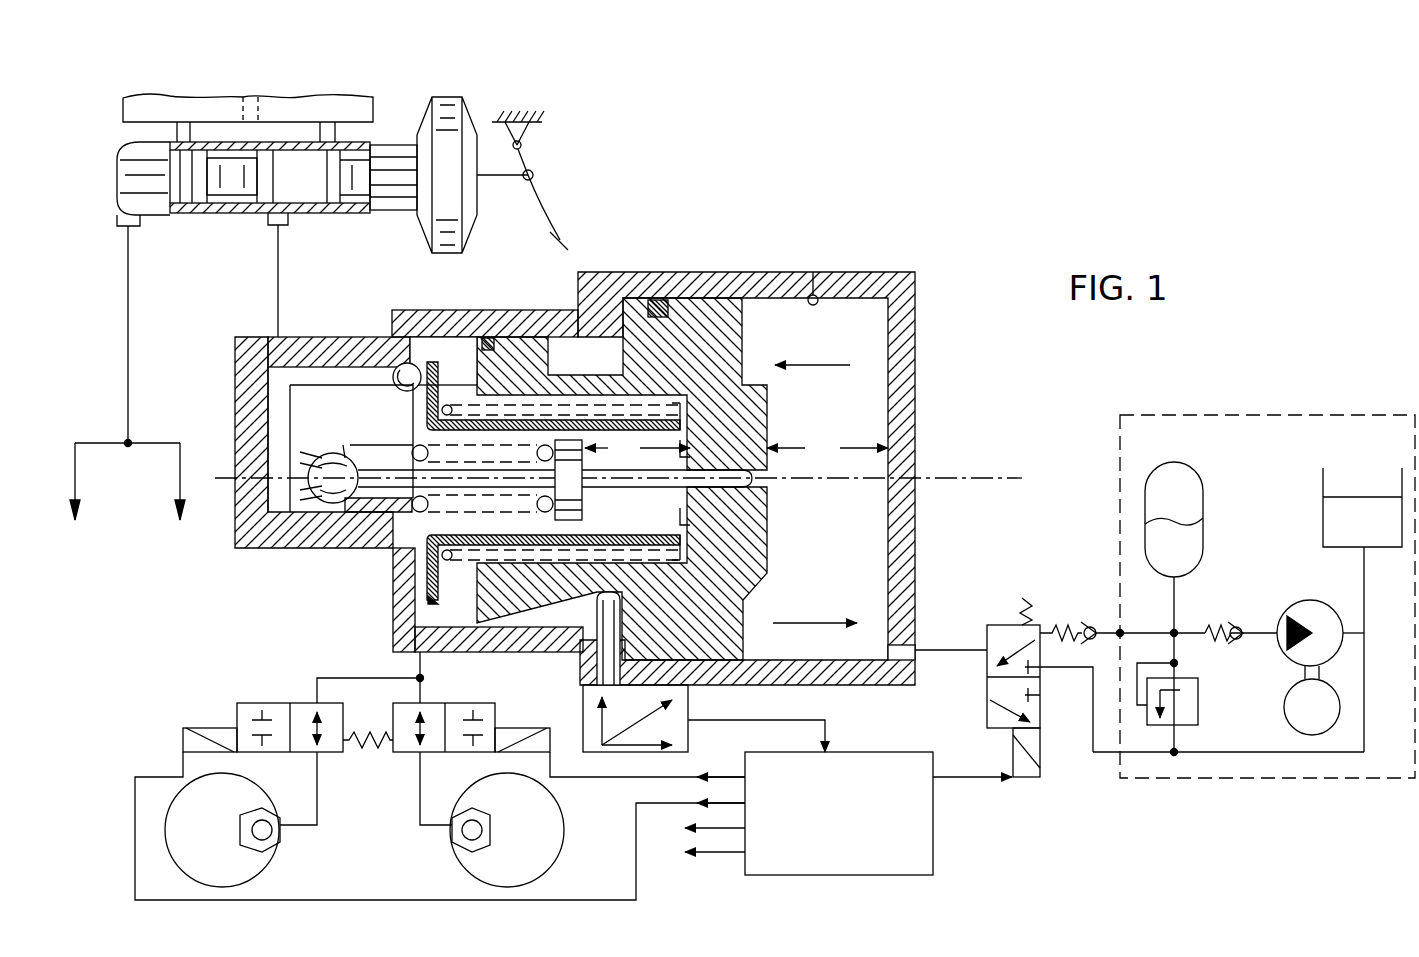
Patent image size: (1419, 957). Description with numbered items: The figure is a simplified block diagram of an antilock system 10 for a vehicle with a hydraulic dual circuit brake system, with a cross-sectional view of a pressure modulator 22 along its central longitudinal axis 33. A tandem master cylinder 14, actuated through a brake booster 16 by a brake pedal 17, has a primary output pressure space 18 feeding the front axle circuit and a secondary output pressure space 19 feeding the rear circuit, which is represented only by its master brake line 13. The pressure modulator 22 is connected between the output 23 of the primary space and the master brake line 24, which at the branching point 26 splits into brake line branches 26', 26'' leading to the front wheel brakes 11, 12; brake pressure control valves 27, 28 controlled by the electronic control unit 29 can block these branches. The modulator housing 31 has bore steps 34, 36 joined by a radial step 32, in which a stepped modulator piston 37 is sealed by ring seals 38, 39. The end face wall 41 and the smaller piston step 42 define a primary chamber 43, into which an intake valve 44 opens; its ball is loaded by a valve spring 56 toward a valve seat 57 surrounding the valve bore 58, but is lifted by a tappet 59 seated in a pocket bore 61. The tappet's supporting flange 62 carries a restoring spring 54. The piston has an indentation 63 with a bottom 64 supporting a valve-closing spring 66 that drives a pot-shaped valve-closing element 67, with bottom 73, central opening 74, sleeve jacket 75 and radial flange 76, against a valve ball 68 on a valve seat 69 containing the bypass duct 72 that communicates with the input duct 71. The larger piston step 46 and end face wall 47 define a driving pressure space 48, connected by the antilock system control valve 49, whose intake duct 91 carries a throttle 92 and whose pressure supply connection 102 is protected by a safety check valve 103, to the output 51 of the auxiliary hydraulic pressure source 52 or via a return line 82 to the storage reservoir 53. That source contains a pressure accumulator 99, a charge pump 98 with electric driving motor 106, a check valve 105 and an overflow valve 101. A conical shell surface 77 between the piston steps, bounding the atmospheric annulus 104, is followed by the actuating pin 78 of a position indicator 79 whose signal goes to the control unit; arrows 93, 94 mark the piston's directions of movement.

The antilock system 10 is at (912, 258).
The front wheel brake 11 is at (198, 858).
The front wheel brake 12 is at (547, 846).
The master brake line 13 is at (126, 388).
The tandem master cylinder 14 is at (385, 142).
The brake booster 16 is at (468, 205).
The brake pedal 17 is at (545, 212).
The primary output pressure space 18 is at (310, 170).
The secondary output pressure space 19 is at (180, 168).
The pressure modulator 22 is at (918, 300).
The output 23 is at (268, 216).
The master brake line 24 is at (415, 665).
The branching point 26 is at (438, 678).
The brake line branch 26' is at (318, 811).
The brake line branch 26'' is at (418, 811).
The brake pressure control valve 27 is at (280, 705).
The brake pressure control valve 28 is at (487, 705).
The electronic control unit 29 is at (934, 842).
The housing 31 is at (770, 276).
The radial step 32 is at (612, 300).
The central longitudinal axis 33 is at (978, 478).
The bore step 34 is at (545, 335).
The bore step 36 is at (815, 293).
The modulator piston 37 is at (640, 298).
The ring seal 38 is at (490, 338).
The ring seal 39 is at (664, 300).
The end face wall 41 is at (348, 546).
The smaller piston step 42 is at (463, 345).
The primary chamber 43 is at (440, 360).
The intake valve 44 is at (278, 550).
The larger piston step 46 is at (733, 346).
The end face wall 47 is at (915, 332).
The driving pressure space 48 is at (862, 388).
The antilock system control valve 49 is at (987, 712).
The output 51 is at (1121, 632).
The auxiliary hydraulic pressure source 52 is at (1243, 414).
The storage reservoir 53 is at (1360, 505).
The restoring spring 54 is at (450, 428).
The valve spring 56 is at (305, 470).
The valve seat 57 is at (363, 442).
The valve bore 58 is at (395, 458).
The tappet 59 is at (503, 400).
The pocket bore 61 is at (766, 506).
The supporting flange 62 is at (581, 502).
The indentation 63 is at (741, 384).
The bottom 64 is at (700, 458).
The valve-closing spring 66 is at (434, 566).
The valve-closing element 67 is at (434, 600).
The valve ball 68 is at (395, 372).
The valve seat 69 is at (400, 365).
The input duct 71 is at (243, 357).
The bypass duct 72 is at (313, 367).
The bottom 73 is at (750, 532).
The central opening 74 is at (678, 520).
The sleeve jacket 75 is at (527, 580).
The radial flange 76 is at (400, 585).
The shell surface 77 is at (568, 368).
The actuating pin 78 is at (690, 602).
The position indicator 79 is at (688, 740).
The return line 82 is at (1093, 754).
The intake duct 91 is at (997, 660).
The throttle 92 is at (1015, 640).
The arrow 93 is at (822, 364).
The arrow 94 is at (806, 628).
The charge pump 98 is at (1290, 615).
The pressure accumulator 99 is at (1187, 537).
The overflow valve 101 is at (1198, 722).
The pressure supply connection 102 is at (1050, 633).
The safety check valve 103 is at (1088, 624).
The annulus 104 is at (575, 622).
The check valve 105 is at (1218, 630).
The electric driving motor 106 is at (1295, 700).